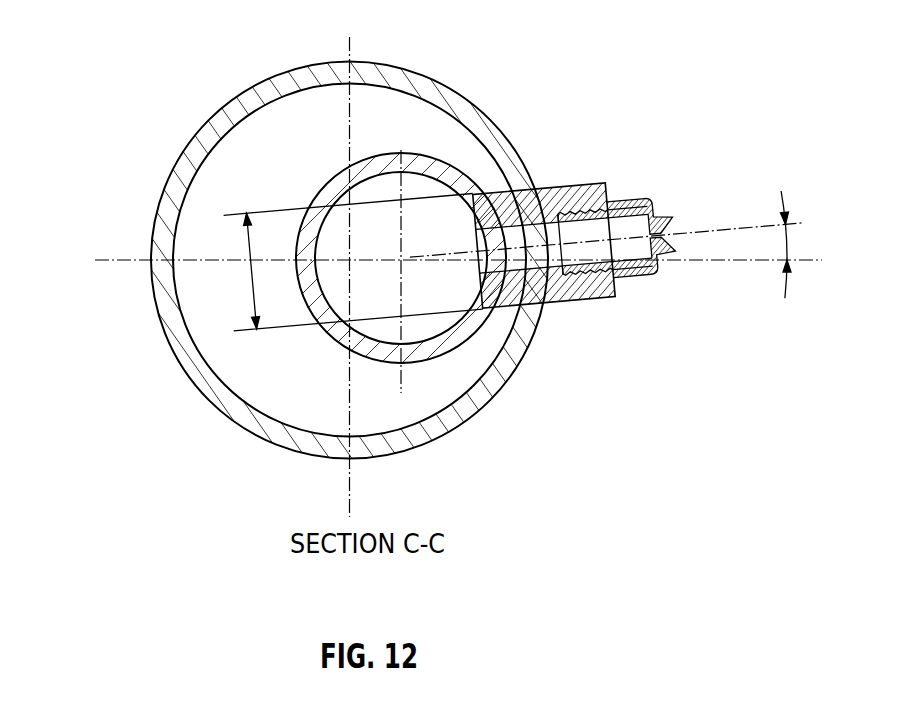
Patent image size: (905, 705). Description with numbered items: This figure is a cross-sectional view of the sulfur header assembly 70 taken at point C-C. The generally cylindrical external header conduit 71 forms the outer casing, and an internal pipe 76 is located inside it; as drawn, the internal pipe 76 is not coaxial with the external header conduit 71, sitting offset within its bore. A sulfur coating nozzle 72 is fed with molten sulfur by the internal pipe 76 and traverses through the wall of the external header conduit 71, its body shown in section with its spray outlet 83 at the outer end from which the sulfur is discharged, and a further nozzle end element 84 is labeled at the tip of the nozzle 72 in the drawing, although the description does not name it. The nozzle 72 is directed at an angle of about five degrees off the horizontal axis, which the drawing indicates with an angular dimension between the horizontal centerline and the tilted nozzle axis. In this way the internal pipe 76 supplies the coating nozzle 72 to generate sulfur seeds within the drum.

The sulfur header assembly 70 is at (108, 130).
The external header conduit 71 is at (445, 437).
The sulfur coating nozzle 72 is at (563, 279).
The internal pipe 76 is at (463, 343).
The spray outlet 83 is at (571, 303).
The nozzle tip 84 is at (662, 257).